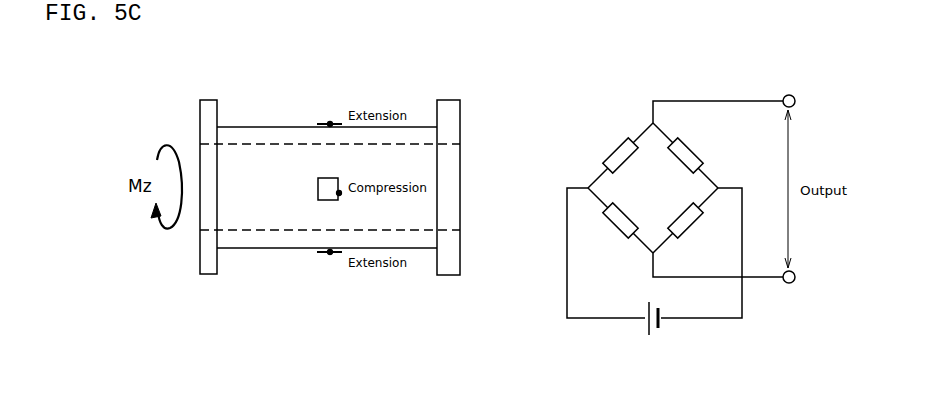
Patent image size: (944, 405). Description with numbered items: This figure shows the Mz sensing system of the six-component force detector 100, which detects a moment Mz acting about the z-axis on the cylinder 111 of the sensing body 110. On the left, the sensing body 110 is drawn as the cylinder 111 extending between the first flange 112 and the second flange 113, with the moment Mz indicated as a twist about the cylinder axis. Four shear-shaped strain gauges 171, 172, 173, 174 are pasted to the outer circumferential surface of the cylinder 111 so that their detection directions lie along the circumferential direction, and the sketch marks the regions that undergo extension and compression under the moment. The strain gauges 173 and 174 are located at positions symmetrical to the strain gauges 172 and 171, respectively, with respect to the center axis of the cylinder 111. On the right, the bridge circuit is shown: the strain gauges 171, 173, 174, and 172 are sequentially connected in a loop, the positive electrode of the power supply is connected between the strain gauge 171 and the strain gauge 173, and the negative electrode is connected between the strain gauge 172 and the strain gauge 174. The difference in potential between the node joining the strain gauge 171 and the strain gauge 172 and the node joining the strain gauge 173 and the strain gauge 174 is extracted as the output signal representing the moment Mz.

The six-component force detector 100 is at (182, 97).
The sensing body 110 is at (187, 120).
The cylinder 111 is at (267, 126).
The first flange 112 is at (200, 268).
The second flange 113 is at (461, 184).
The strain gauge 171 is at (330, 122).
The strain gauge 172 is at (341, 195).
The strain gauge 173 is at (618, 228).
The strain gauge 174 is at (330, 256).